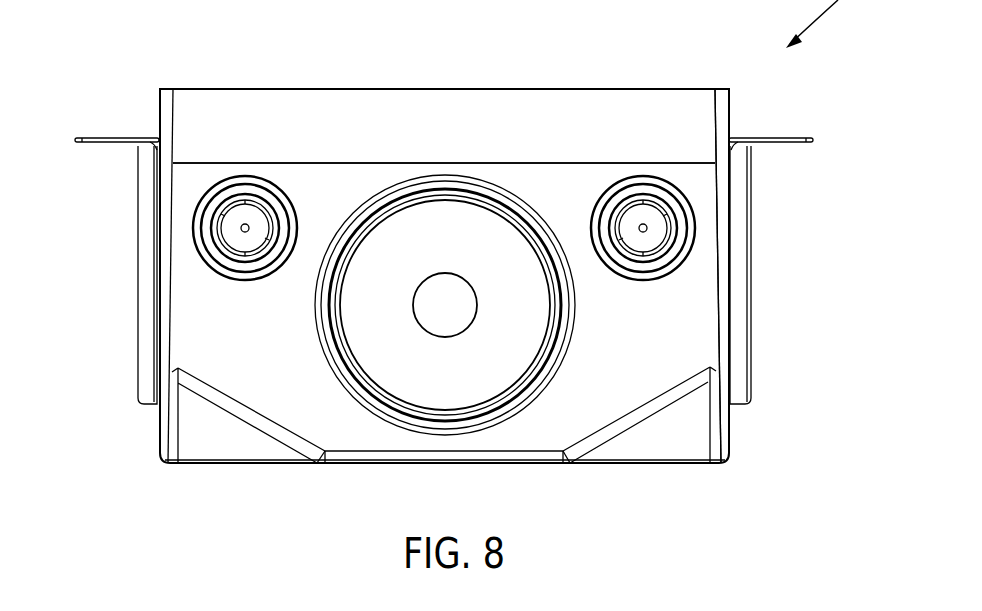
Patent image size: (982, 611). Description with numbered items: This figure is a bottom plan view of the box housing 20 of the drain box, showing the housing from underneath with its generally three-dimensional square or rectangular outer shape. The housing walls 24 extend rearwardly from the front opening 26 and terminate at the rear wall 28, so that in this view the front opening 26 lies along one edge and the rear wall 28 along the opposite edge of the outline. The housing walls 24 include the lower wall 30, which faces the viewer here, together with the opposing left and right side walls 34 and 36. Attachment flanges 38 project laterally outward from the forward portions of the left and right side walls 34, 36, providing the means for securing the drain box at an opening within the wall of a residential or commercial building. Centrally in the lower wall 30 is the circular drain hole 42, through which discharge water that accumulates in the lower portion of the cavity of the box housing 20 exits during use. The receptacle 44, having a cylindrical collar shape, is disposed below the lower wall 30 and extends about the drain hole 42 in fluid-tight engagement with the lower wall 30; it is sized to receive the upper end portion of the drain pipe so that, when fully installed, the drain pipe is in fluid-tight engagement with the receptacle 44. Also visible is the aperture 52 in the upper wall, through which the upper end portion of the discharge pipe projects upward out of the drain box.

The box housing 20 is at (678, 350).
The housing walls 24 is at (723, 218).
The front opening 26 is at (322, 88).
The rear wall 28 is at (598, 465).
The lower wall 30 is at (276, 354).
The left side wall 34 is at (165, 313).
The right side wall 36 is at (737, 270).
The attachment flanges 38 is at (108, 137).
The drain hole 42 is at (490, 255).
The receptacle 44 is at (477, 407).
The aperture 52 is at (444, 307).